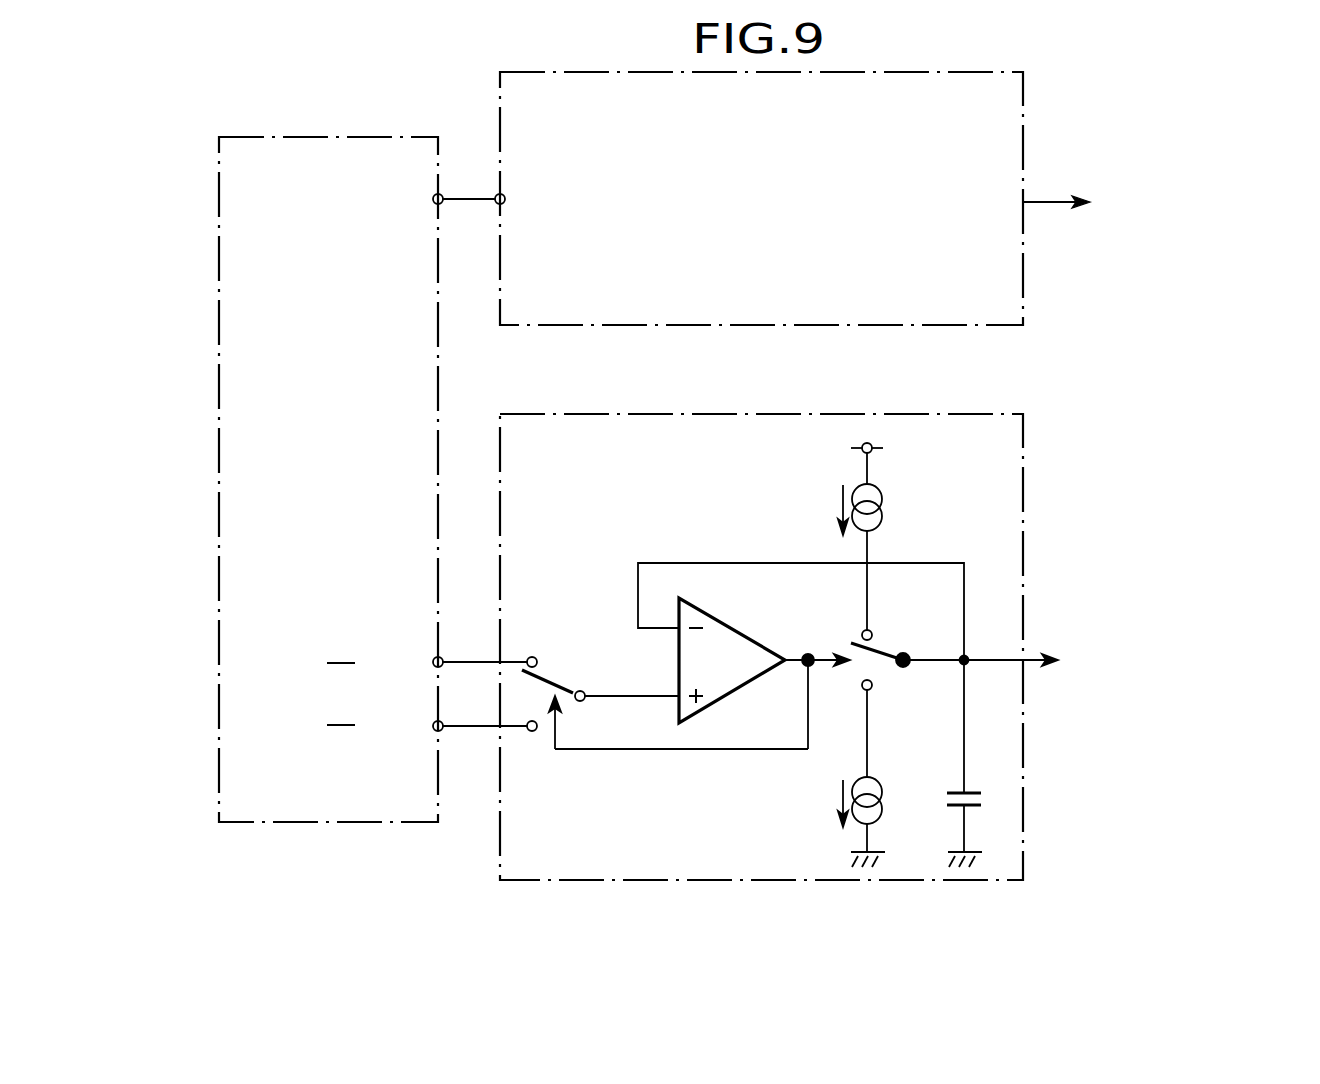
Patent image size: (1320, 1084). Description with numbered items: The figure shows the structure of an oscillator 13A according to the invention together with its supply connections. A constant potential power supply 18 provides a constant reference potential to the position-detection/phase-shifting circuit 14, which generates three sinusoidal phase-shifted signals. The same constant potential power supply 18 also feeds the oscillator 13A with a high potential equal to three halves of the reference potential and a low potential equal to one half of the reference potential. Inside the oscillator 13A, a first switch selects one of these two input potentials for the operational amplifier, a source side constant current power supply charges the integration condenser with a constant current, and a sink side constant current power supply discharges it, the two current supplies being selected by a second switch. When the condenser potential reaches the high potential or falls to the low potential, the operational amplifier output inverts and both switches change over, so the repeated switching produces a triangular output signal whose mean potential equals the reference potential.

The constant potential power supply 18 is at (438, 137).
The position-detection/phase-shifting circuit 14 is at (1023, 105).
The oscillator 13A is at (1023, 448).